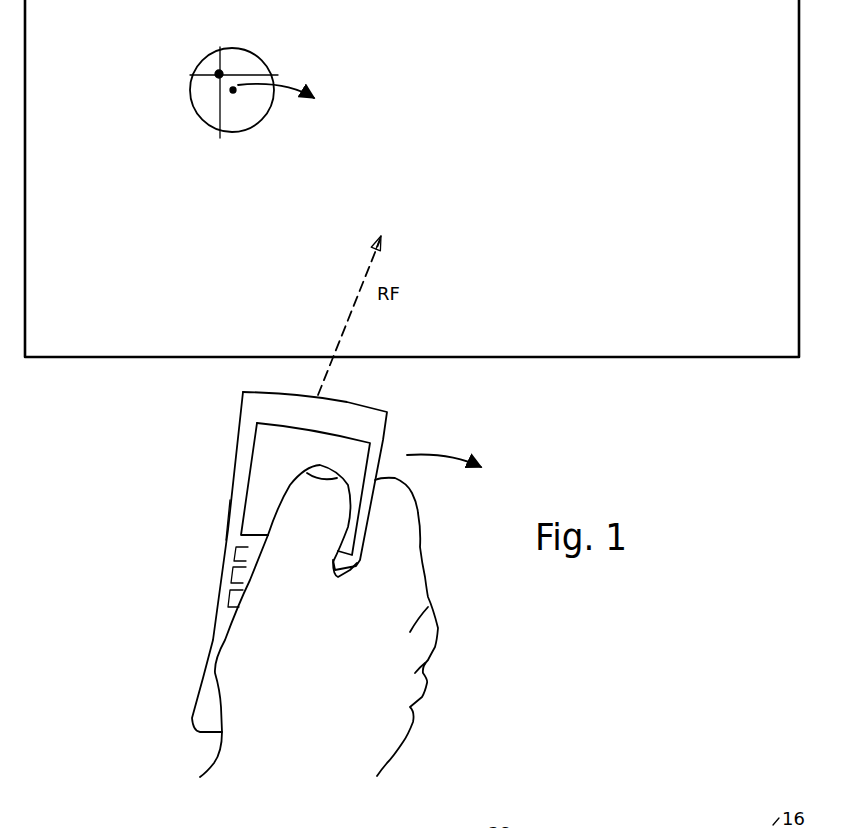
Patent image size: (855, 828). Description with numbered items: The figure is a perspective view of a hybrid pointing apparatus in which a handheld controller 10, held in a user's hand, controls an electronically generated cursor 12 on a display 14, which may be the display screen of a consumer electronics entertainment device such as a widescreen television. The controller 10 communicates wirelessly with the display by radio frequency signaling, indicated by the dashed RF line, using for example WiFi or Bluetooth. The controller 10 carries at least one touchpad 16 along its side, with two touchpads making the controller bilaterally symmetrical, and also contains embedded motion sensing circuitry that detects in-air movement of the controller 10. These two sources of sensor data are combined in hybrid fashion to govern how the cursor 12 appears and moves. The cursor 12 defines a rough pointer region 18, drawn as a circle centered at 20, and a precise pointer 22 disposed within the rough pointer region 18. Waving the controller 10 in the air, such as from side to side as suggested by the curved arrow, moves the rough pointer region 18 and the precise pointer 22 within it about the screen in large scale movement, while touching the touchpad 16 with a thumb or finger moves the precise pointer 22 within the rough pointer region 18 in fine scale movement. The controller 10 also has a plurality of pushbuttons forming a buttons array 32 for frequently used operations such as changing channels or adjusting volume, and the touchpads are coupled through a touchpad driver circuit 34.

The handheld controller 10 is at (240, 413).
The cursor 12 is at (180, 118).
The display 14 is at (620, 343).
The touchpad 16 is at (265, 492).
The rough pointer region 18 is at (270, 110).
The center of rough pointer region 20 is at (233, 90).
The precise pointer 22 is at (219, 74).
The buttons array 32 is at (242, 555).
The touchpad driver circuit 34 is at (618, 825).